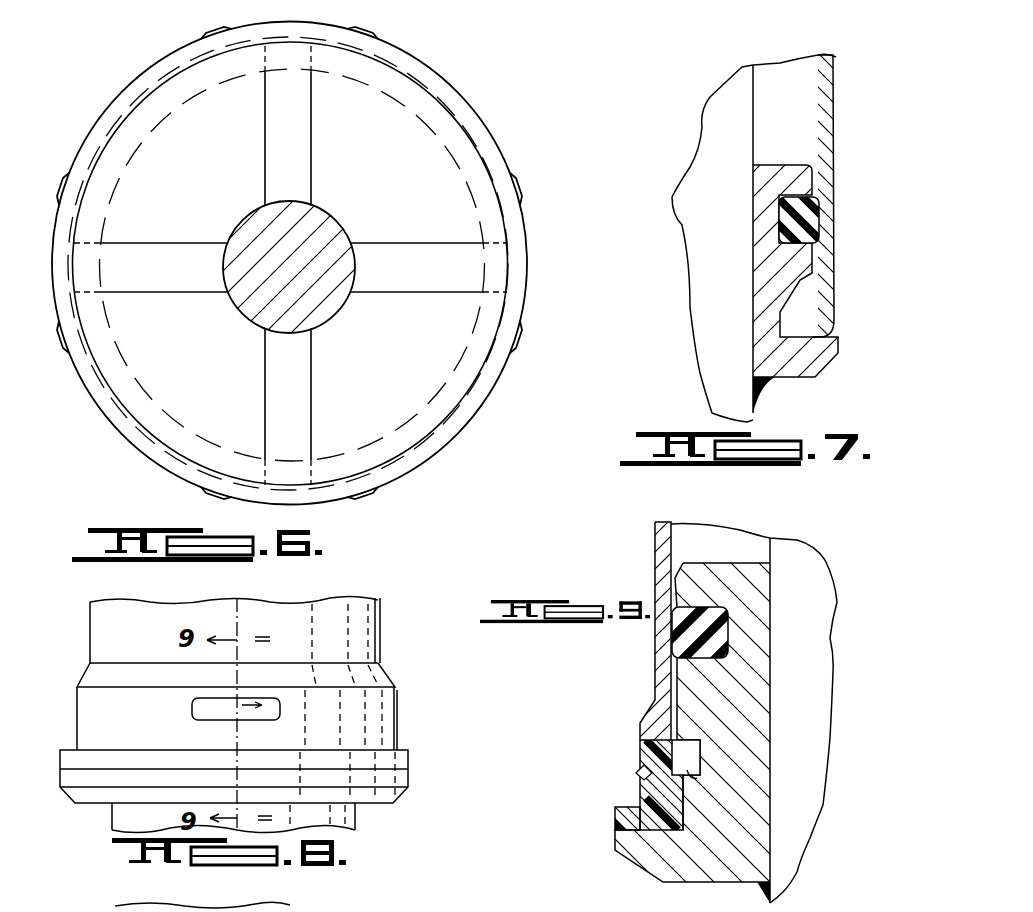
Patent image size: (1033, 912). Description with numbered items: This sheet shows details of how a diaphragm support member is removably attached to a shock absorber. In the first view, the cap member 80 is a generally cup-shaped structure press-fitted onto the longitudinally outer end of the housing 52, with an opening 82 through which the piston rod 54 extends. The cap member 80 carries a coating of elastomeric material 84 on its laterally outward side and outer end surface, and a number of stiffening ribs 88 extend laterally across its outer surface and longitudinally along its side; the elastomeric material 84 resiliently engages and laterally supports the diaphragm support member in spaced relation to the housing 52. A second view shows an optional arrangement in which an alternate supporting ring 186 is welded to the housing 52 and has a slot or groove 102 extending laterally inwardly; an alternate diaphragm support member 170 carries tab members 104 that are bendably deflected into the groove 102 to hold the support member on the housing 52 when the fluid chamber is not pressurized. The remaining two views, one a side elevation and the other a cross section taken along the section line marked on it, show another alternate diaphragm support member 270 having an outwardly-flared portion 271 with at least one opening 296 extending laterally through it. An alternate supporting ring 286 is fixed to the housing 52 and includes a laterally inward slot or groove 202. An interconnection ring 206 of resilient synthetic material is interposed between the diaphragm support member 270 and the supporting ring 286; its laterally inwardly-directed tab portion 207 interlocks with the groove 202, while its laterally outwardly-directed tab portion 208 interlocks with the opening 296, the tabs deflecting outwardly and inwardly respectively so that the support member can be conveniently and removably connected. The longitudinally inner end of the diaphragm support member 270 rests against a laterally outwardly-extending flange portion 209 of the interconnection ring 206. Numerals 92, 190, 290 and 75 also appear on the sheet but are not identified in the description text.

In FIG. 6, the cap member 80 is at (482, 148).
In FIG. 6, the opening 82 is at (336, 232).
In FIG. 6, the elastomeric material 84 is at (430, 118).
In FIG. 6, the stiffening ribs 88 is at (265, 147).
In FIG. 6, the piston rod 54 is at (318, 315).
In FIG. 7, the housing 52 is at (718, 112).
In FIG. 8, the housing 52 is at (356, 819).
In FIG. 9, the housing 52 is at (812, 680).
In FIG. 7, the diaphragm support member 170 is at (834, 142).
In FIG. 7, the seal ring 92 is at (818, 227).
In FIG. 9, the seal ring 92 is at (680, 644).
In FIG. 7, the supporting ring 186 is at (762, 278).
In FIG. 7, the tab member 104 is at (818, 297).
In FIG. 7, the slot or groove 102 is at (808, 328).
In FIG. 7, the flange 190 is at (802, 366).
In FIG. 8, the diaphragm support member 270 is at (372, 630).
In FIG. 9, the diaphragm support member 270 is at (660, 681).
In FIG. 8, the outwardly-flared portion 271 is at (396, 708).
In FIG. 8, the flange portion 209 is at (408, 757).
In FIG. 9, the flange portion 209 is at (620, 809).
In FIG. 8, the flange 290 is at (410, 779).
In FIG. 9, the flange 290 is at (650, 857).
In FIG. 8, the outwardly-directed tab portion 208 is at (205, 713).
In FIG. 9, the outwardly-directed tab portion 208 is at (650, 766).
In FIG. 8, the opening 296 is at (218, 722).
In FIG. 9, the opening 296 is at (643, 745).
In FIG. 9, the inwardly-directed tab portion 207 is at (690, 760).
In FIG. 9, the slot or groove 202 is at (692, 780).
In FIG. 9, the supporting ring 286 is at (771, 831).
In FIG. 9, the interconnection ring 206 is at (603, 833).
In FIG. 8, the valve body 75 is at (192, 907).